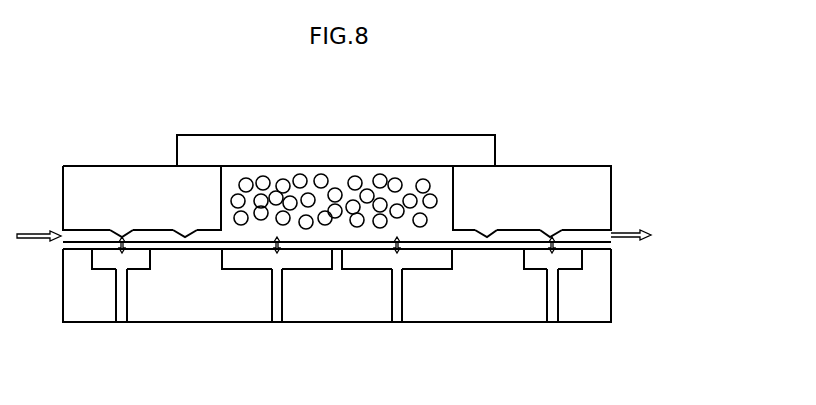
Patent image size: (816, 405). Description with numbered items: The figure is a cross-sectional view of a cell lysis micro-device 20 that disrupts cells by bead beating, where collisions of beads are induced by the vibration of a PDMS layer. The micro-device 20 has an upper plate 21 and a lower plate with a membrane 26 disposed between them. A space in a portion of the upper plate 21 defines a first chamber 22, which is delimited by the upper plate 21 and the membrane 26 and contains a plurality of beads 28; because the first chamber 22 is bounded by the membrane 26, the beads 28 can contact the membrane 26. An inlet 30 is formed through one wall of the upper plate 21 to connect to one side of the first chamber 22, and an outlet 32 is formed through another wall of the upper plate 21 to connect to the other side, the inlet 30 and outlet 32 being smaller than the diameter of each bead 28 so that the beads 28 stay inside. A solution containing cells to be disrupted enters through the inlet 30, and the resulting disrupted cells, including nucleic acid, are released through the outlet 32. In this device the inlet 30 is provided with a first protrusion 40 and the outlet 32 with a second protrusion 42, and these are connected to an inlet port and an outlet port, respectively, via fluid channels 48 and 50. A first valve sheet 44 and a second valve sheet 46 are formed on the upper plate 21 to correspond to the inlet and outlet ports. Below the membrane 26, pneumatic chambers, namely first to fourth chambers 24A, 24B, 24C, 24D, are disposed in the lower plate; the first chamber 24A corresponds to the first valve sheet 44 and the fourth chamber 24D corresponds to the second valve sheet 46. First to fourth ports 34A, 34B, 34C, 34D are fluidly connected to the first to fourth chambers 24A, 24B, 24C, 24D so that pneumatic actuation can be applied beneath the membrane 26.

The micro-device 20 is at (607, 135).
The upper plate 21 is at (611, 195).
The first chamber 22 is at (233, 175).
The first chamber 24A is at (100, 270).
The second chamber 24B is at (246, 270).
The third chamber 24C is at (428, 270).
The fourth chamber 24D is at (585, 270).
The membrane 26 is at (611, 248).
The beads 28 is at (328, 175).
The inlet 30 is at (213, 237).
The outlet 32 is at (485, 238).
The first port 34A is at (122, 272).
The second port 34B is at (276, 272).
The third port 34C is at (397, 272).
The fourth port 34D is at (552, 272).
The first protrusion 40 is at (185, 237).
The second protrusion 42 is at (490, 236).
The first valve sheet 44 is at (124, 240).
The second valve sheet 46 is at (549, 238).
The fluid channel 48 is at (155, 240).
The fluid channel 50 is at (523, 238).